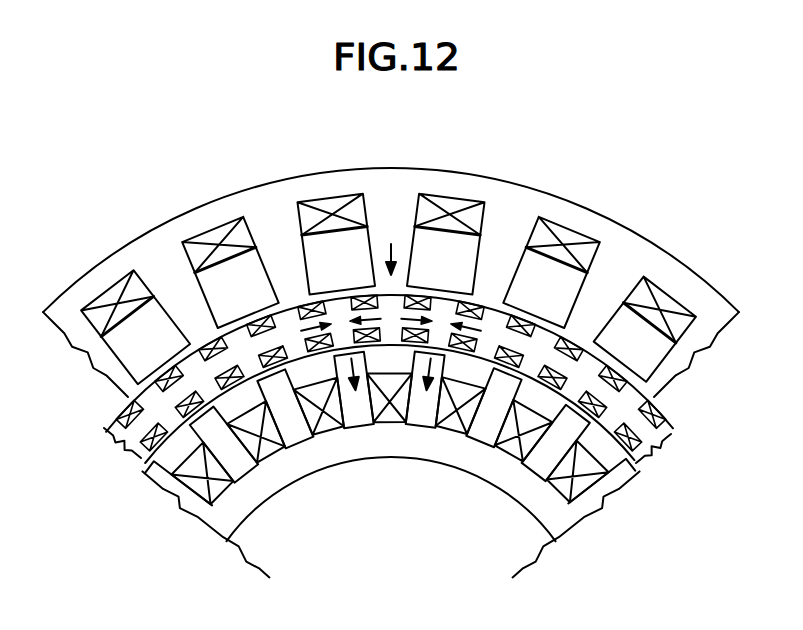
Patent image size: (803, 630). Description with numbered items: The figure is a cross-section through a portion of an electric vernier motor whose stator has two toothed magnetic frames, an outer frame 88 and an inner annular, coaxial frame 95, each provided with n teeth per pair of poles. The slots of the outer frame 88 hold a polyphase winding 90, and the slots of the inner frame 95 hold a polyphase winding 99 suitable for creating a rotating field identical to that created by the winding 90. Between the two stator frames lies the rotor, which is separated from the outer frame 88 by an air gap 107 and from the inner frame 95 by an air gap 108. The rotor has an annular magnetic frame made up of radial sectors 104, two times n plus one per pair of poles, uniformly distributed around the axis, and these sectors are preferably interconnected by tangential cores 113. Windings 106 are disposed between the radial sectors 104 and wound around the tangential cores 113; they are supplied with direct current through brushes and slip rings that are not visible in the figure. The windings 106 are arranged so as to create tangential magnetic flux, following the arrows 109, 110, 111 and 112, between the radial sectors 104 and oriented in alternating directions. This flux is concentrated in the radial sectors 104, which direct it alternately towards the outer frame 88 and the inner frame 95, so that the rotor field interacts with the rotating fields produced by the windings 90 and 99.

The toothed frame 88 is at (263, 198).
The polyphase winding 90 is at (332, 204).
The fixed magnetic frame 95 is at (412, 445).
The polyphase winding 99 is at (331, 427).
The radial sectors 104 is at (580, 380).
The windings 106 is at (523, 320).
The air gap 107 is at (180, 330).
The air gap 108 is at (503, 370).
The arrow 109 is at (473, 325).
The arrow 110 is at (412, 303).
The arrow 111 is at (367, 301).
The arrow 112 is at (310, 333).
The tangential cores 113 is at (263, 342).